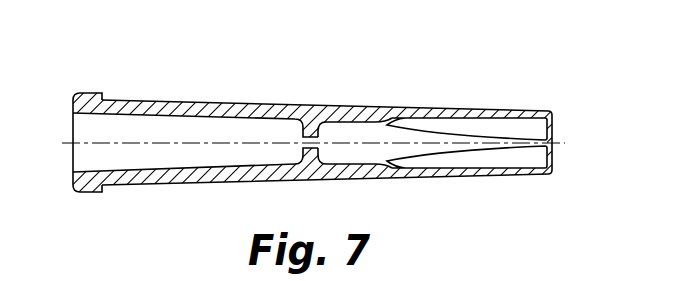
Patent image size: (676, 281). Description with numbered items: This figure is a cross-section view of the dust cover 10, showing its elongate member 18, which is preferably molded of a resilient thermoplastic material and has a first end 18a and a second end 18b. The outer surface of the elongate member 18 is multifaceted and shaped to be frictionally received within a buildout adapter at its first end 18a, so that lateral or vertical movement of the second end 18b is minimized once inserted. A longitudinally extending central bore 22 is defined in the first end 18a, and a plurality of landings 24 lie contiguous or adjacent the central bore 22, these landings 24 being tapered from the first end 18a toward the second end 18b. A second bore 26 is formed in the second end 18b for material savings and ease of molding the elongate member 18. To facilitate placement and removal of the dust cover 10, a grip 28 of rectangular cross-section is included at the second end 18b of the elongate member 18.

The dust cover 10 is at (319, 98).
The elongate member 18 is at (256, 106).
The first end 18a is at (553, 140).
The second end 18b is at (78, 93).
The central bore 22 is at (363, 132).
The landings 24 is at (448, 127).
The bore 26 is at (172, 125).
The grip 28 is at (75, 188).